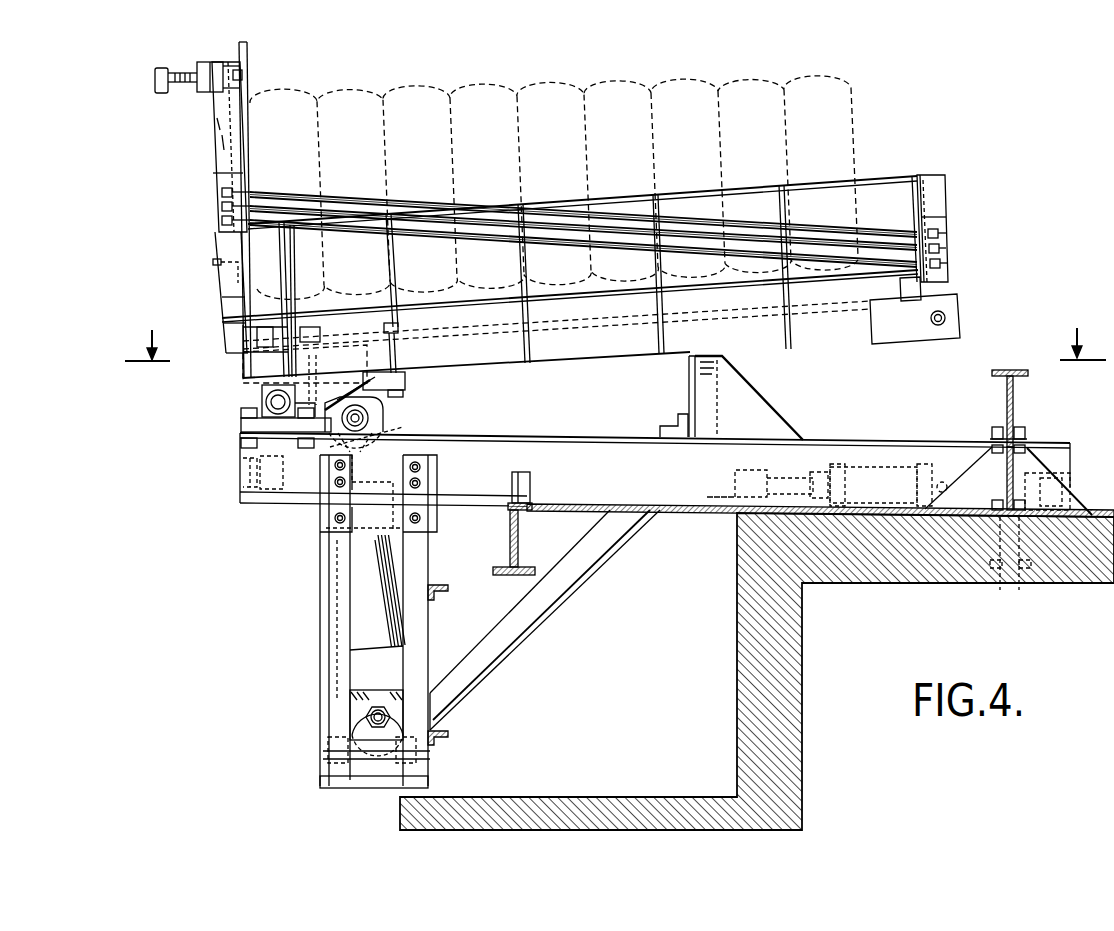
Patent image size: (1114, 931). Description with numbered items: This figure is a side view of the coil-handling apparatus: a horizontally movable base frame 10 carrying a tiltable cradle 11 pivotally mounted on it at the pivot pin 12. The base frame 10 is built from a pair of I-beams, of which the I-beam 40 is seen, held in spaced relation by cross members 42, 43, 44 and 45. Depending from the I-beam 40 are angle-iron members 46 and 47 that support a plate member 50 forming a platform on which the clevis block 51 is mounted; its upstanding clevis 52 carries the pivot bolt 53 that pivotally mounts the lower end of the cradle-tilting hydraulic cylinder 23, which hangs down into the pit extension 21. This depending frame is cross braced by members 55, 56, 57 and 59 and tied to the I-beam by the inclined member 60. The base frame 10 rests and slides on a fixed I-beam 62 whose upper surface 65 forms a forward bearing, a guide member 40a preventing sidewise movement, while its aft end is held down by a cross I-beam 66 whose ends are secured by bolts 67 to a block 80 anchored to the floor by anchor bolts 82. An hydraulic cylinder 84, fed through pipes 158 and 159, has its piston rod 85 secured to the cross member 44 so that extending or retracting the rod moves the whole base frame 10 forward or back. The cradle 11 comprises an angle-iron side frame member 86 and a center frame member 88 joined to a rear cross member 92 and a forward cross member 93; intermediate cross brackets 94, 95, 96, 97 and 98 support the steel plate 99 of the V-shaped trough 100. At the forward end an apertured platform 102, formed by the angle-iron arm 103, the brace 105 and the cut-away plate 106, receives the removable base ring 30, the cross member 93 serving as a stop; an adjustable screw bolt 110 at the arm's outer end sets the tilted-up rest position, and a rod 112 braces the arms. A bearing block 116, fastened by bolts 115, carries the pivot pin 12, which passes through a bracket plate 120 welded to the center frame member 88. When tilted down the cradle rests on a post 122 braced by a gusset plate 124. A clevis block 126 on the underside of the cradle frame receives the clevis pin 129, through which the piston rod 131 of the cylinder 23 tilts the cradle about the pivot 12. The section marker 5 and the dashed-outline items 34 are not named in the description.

The section line 5- 5 is at (615, 344).
The base frame 10 is at (646, 472).
The cradle 11 is at (957, 197).
The pivot pin 12 is at (247, 411).
The pit extension 21 is at (624, 716).
The hydraulic cylinder 23 is at (377, 622).
The base ring 30 is at (248, 90).
The bags 34 is at (465, 94).
The I-beam 40 is at (561, 440).
The guide member 40a is at (530, 483).
The cross member 42 is at (245, 471).
The cross member 43 is at (1070, 491).
The cross member 44 is at (718, 508).
The cross member 45 is at (662, 426).
The angle-iron member 46 is at (334, 575).
The angle-iron member 47 is at (420, 570).
The plate member 50 is at (381, 767).
The clevis block 51 is at (345, 746).
The clevis 52 is at (360, 706).
The pivot bolt 53 is at (377, 708).
The cross brace member 55 is at (447, 591).
The cross brace member 56 is at (443, 737).
The cross brace member 57 is at (321, 522).
The cross brace member 59 is at (438, 471).
The inclined member 60 is at (548, 604).
The I-beam 62 is at (518, 555).
The upper surface 65 is at (530, 506).
The I-beam 66 is at (1014, 392).
The bolts 67 is at (996, 432).
The block 80 is at (1007, 479).
The anchor bolts 82 is at (1019, 590).
The hydraulic cylinder 84 is at (882, 467).
The piston rod 85 is at (784, 478).
The side frame member 86 is at (490, 283).
The center frame member 88 is at (600, 354).
The cross member 92 is at (922, 296).
The cross member 93 is at (256, 340).
The cross bracket 94 is at (789, 346).
The cross bracket 95 is at (659, 354).
The cross bracket 96 is at (524, 362).
The cross bracket 97 is at (400, 327).
The cross bracket 98 is at (289, 366).
The steel plate 99 is at (821, 192).
The trough 100 is at (554, 247).
The platform 102 is at (227, 120).
The angle iron arm 103 is at (222, 165).
The brace 105 is at (213, 261).
The plate 106 is at (235, 134).
The adjustable screw bolt 110 is at (155, 80).
The rod 112 is at (890, 263).
The bolts 115 is at (246, 424).
The bearing block 116 is at (262, 393).
The bracket plate 120 is at (344, 352).
The post 122 is at (689, 386).
The gusset plate 124 is at (763, 414).
The clevis block 126 is at (406, 384).
The clevis pin 129 is at (369, 417).
The piston rod 131 is at (404, 430).
The pipe 158 is at (837, 476).
The pipe 159 is at (923, 476).